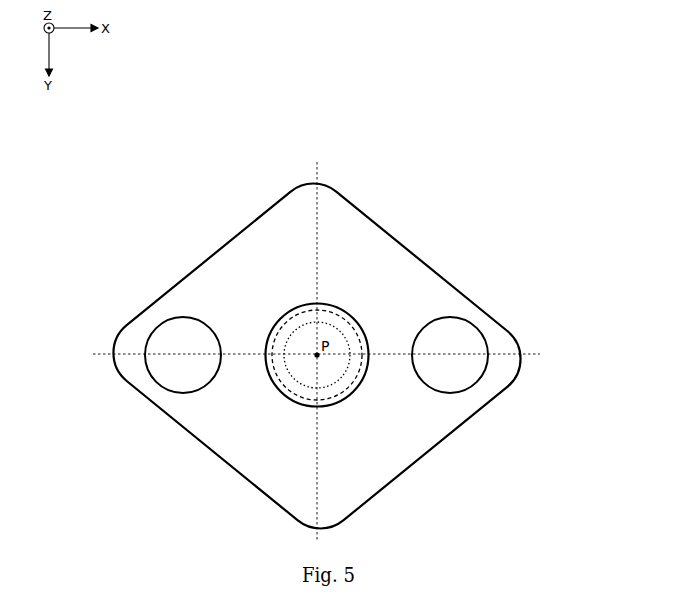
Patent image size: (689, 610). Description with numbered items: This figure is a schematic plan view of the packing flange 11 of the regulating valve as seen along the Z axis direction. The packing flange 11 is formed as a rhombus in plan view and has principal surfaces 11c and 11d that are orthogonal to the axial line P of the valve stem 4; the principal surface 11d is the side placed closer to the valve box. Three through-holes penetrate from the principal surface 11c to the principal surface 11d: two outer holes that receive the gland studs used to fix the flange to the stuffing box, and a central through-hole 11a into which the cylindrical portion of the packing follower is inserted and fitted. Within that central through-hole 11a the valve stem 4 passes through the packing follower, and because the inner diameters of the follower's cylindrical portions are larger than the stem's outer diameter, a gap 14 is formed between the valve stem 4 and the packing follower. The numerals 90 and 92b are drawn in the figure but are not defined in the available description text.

The packing flange 11 is at (579, 158).
The through-hole 11a is at (351, 336).
The principal surface 11c is at (440, 294).
The principal surface 11d is at (447, 421).
The gap 14 is at (295, 317).
The valve stem 4 is at (287, 340).
The central through hole 90 is at (360, 319).
The annular portion 92b is at (330, 317).